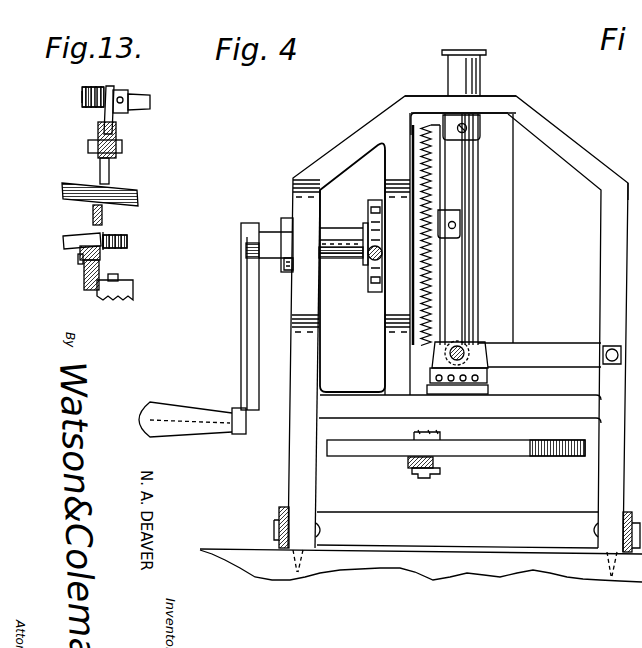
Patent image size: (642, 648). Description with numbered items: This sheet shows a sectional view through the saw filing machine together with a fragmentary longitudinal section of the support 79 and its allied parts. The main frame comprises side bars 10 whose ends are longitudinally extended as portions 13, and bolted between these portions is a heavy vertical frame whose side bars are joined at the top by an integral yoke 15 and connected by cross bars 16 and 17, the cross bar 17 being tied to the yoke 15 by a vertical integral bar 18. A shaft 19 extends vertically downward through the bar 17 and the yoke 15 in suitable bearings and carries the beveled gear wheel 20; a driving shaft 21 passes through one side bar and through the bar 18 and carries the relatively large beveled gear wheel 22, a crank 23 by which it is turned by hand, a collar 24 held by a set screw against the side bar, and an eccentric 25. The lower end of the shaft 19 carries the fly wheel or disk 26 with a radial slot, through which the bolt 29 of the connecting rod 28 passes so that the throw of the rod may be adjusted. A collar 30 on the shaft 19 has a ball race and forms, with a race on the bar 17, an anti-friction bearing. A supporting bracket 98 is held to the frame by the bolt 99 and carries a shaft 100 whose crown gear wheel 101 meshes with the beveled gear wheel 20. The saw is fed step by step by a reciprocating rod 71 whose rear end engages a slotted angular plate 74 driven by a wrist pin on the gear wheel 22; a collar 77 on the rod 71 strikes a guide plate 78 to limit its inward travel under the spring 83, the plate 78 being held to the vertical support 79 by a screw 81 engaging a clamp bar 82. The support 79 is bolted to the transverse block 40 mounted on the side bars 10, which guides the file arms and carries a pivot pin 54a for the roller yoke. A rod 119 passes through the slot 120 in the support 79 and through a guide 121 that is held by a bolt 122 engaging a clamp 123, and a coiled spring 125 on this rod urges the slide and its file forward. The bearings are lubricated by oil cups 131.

In FIG. 4, the side bars 10 is at (293, 508).
In FIG. 4, the longitudinally extended portions 13 is at (279, 517).
In FIG. 4, the yoke 15 is at (495, 100).
In FIG. 4, the cross bar 16 is at (406, 518).
In FIG. 4, the cross bar 17 is at (570, 402).
In FIG. 4, the vertical integral bar 18 is at (383, 370).
In FIG. 4, the shaft 19 is at (472, 307).
In FIG. 4, the beveled gear wheel 20 is at (487, 373).
In FIG. 4, the driving shaft 21 is at (348, 260).
In FIG. 4, the beveled gear wheel 22 is at (417, 306).
In FIG. 4, the crank 23 is at (246, 402).
In FIG. 4, the collar 24 is at (286, 264).
In FIG. 4, the eccentric 25 is at (363, 272).
In FIG. 4, the fly wheel or disk 26 is at (537, 456).
In FIG. 4, the connecting rod 28 is at (408, 462).
In FIG. 4, the bolt 29 is at (428, 478).
In FIG. 4, the collar 30 is at (488, 391).
In FIG. 13, the block 40 is at (110, 300).
In FIG. 13, the pivot pin 54a is at (118, 277).
In FIG. 13, the reciprocating rod 71 is at (150, 104).
In FIG. 4, the reciprocating rod 71 is at (470, 235).
In FIG. 4, the angular plate 74 is at (461, 225).
In FIG. 13, the collar 77 is at (128, 92).
In FIG. 13, the guide plate 78 is at (104, 115).
In FIG. 13, the support 79 is at (109, 170).
In FIG. 13, the screw 81 is at (88, 146).
In FIG. 13, the clamp bar 82 is at (122, 147).
In FIG. 13, the spring 83 is at (102, 86).
In FIG. 4, the supporting bracket 98 is at (575, 352).
In FIG. 4, the bolt 99 is at (611, 347).
In FIG. 13, the shaft 100 is at (80, 200).
In FIG. 4, the shaft 100 is at (468, 349).
In FIG. 4, the crown gear wheel 101 is at (464, 348).
In FIG. 13, the rod 119 is at (80, 252).
In FIG. 13, the slot 120 is at (63, 240).
In FIG. 13, the guide 121 is at (105, 236).
In FIG. 13, the bolt 122 is at (84, 272).
In FIG. 13, the clamp 123 is at (78, 258).
In FIG. 13, the coiled spring 125 is at (127, 242).
In FIG. 4, the oil cups 131 is at (440, 62).